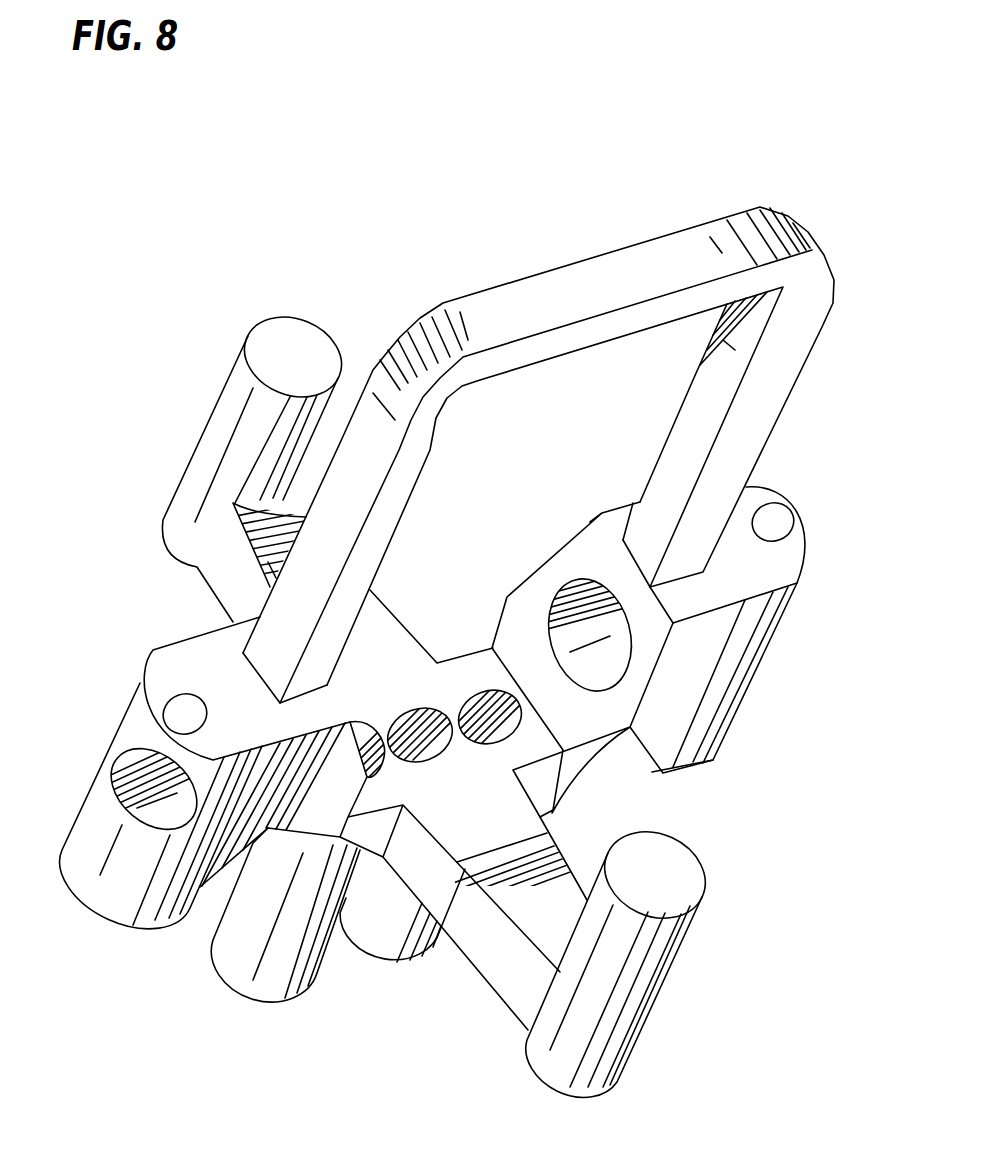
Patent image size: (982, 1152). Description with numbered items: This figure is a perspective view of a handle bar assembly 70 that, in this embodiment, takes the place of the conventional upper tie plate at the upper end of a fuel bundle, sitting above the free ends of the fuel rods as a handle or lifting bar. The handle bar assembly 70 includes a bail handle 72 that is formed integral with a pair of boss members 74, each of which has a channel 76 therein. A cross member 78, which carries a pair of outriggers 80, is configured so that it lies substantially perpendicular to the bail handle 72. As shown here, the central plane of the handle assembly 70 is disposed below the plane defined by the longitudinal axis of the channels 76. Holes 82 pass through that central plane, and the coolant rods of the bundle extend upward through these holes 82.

The handle bar assembly 70 is at (818, 195).
The bail handle 72 is at (557, 287).
The boss members 74 is at (167, 670).
The channels 76 is at (124, 788).
The cross member 78 is at (453, 829).
The outriggers 80 is at (297, 352).
The holes 82 is at (490, 690).